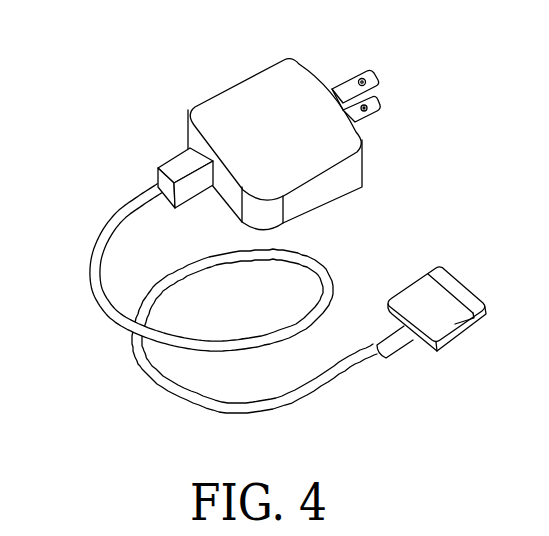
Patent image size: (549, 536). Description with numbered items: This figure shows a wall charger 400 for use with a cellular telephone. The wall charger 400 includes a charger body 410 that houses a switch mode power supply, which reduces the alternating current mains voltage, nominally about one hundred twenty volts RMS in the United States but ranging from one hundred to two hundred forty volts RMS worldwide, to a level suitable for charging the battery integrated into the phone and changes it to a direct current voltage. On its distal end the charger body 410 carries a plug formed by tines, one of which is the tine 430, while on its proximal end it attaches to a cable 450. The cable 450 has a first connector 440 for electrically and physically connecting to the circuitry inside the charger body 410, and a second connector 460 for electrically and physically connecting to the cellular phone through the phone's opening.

The wall charger 400 is at (277, 258).
The charger body 410 is at (251, 90).
The tine 430 is at (345, 82).
The first connector 440 is at (180, 163).
The cable 450 is at (92, 253).
The second connector 460 is at (473, 320).